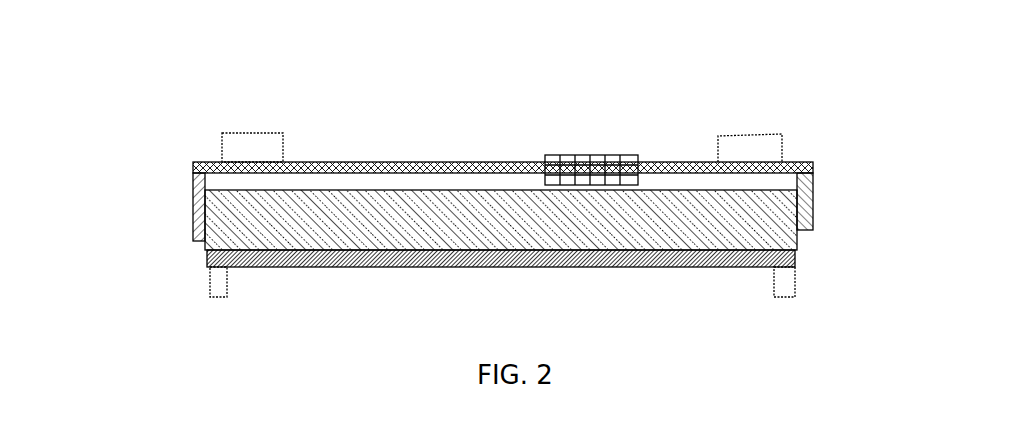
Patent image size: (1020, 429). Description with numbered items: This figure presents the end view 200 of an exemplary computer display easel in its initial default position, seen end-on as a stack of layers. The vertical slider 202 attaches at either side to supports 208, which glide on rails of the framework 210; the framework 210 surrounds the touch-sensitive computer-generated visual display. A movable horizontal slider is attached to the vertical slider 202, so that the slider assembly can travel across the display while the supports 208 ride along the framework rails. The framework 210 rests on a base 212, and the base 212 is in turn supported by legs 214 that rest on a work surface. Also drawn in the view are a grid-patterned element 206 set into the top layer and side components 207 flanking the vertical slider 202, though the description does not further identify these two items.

The end view 200 is at (578, 86).
The vertical slider 202 is at (683, 160).
The grid electrode element 206 is at (548, 157).
The side components 207 is at (252, 133).
The supports 208 is at (193, 197).
The framework 210 is at (206, 238).
The base 212 is at (796, 258).
The legs 214 is at (208, 279).